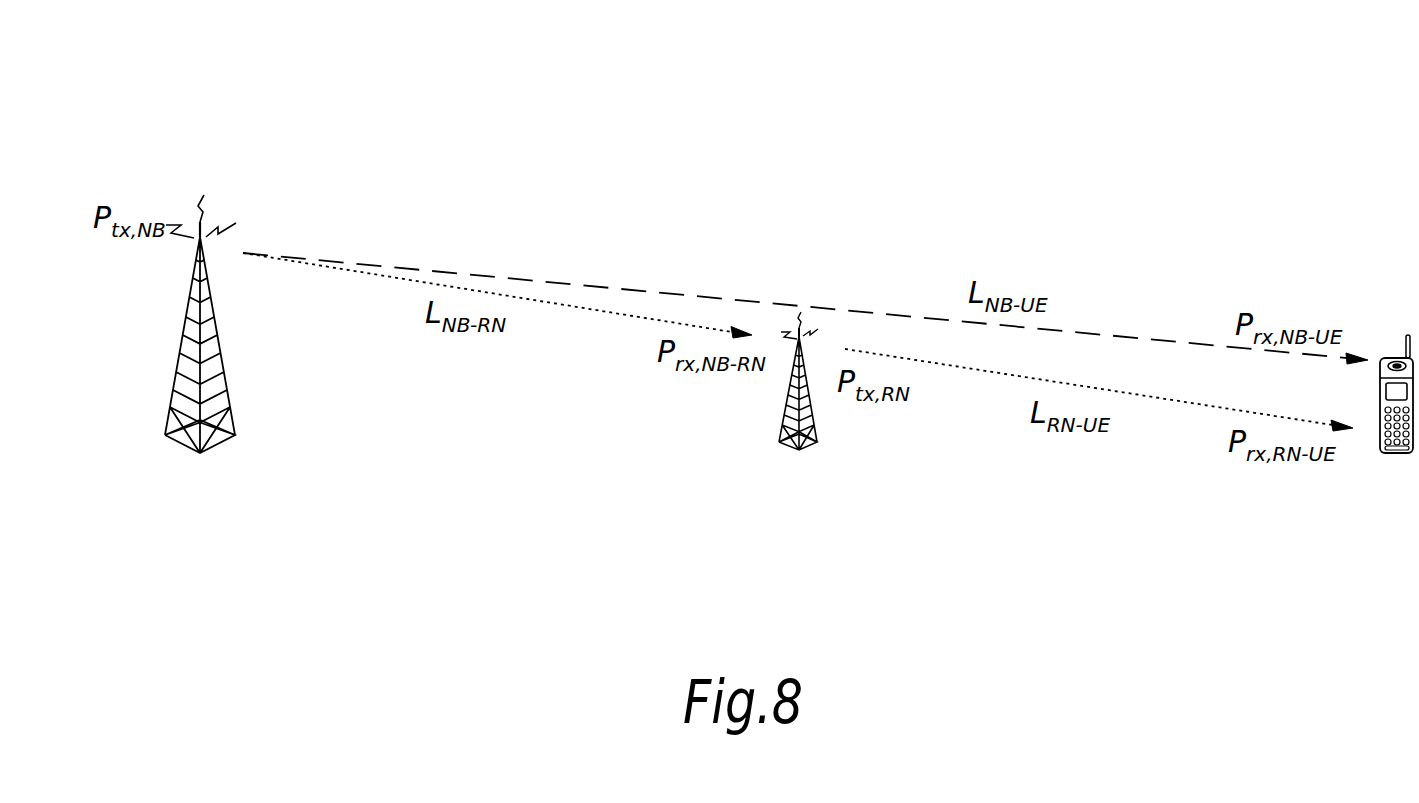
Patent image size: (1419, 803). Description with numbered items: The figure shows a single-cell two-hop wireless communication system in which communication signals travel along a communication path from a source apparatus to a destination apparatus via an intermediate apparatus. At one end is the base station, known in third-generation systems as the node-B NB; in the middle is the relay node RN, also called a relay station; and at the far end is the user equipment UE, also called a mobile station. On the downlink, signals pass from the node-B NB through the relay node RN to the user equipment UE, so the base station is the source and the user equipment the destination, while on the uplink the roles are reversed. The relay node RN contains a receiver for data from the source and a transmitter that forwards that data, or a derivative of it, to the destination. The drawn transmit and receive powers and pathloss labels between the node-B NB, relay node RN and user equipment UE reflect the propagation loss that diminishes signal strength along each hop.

The node-B base station NB is at (201, 367).
The relay node RN is at (799, 423).
The user equipment UE is at (1396, 415).